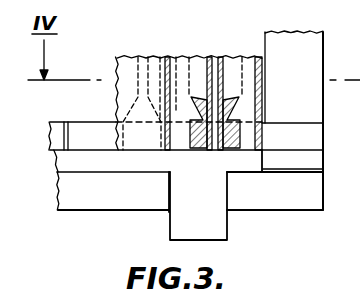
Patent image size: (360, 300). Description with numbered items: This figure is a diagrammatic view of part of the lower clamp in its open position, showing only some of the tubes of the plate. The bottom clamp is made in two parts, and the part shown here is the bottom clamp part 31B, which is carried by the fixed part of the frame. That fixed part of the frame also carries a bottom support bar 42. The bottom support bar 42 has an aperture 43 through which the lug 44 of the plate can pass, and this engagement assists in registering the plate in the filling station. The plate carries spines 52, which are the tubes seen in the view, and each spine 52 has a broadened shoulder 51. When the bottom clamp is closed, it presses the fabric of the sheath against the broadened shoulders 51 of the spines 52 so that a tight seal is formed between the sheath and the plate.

The bottom clamp part 31B is at (60, 122).
The bottom support bar 42 is at (303, 189).
The aperture 43 is at (230, 190).
The lug 44 is at (170, 222).
The broadened shoulder 51 is at (142, 142).
The spine 52 is at (204, 57).